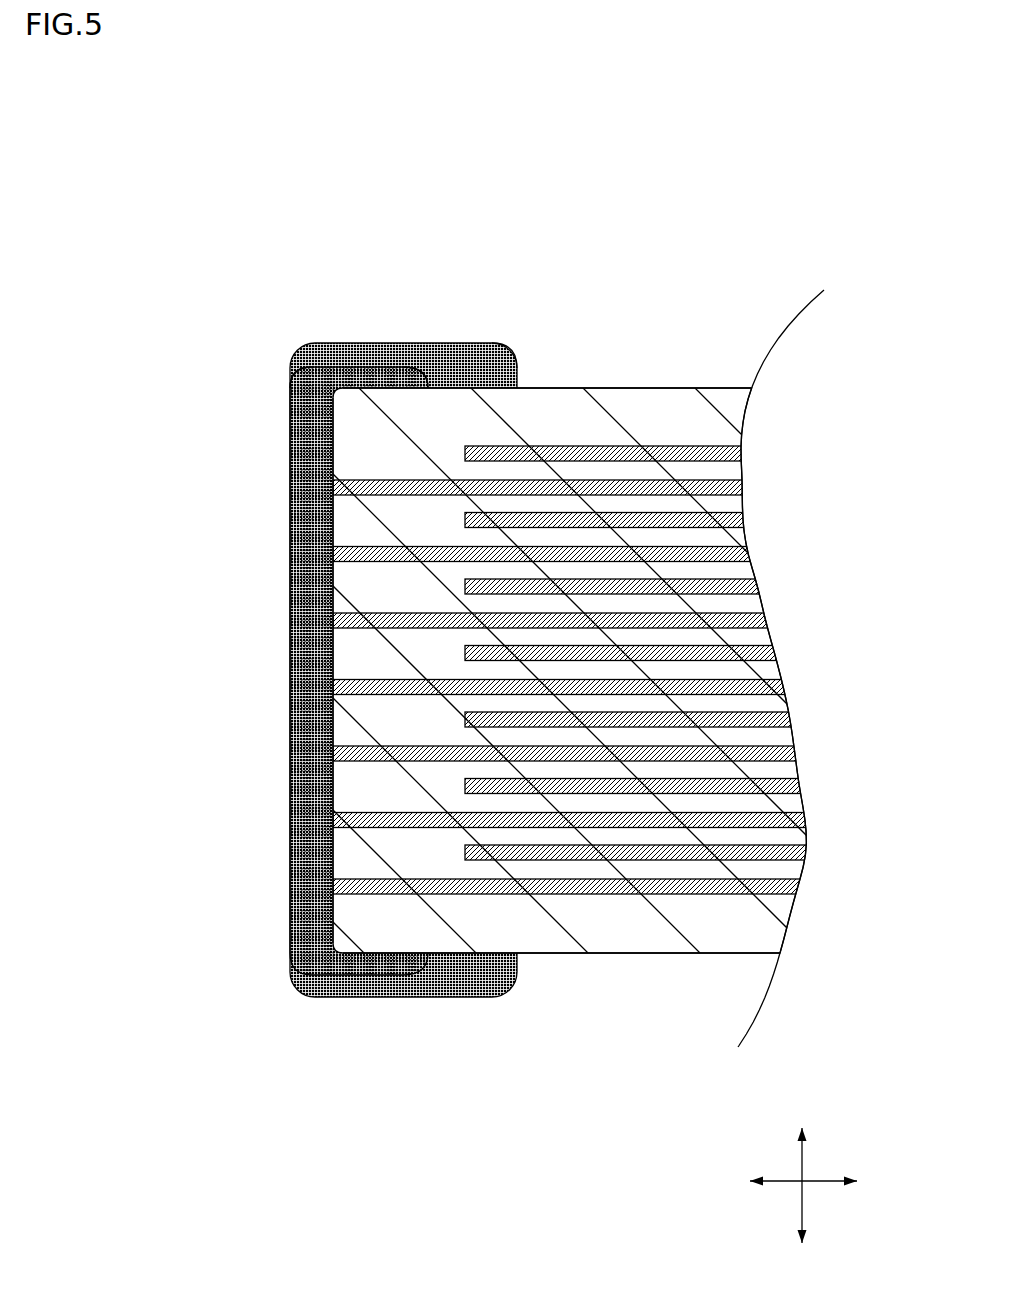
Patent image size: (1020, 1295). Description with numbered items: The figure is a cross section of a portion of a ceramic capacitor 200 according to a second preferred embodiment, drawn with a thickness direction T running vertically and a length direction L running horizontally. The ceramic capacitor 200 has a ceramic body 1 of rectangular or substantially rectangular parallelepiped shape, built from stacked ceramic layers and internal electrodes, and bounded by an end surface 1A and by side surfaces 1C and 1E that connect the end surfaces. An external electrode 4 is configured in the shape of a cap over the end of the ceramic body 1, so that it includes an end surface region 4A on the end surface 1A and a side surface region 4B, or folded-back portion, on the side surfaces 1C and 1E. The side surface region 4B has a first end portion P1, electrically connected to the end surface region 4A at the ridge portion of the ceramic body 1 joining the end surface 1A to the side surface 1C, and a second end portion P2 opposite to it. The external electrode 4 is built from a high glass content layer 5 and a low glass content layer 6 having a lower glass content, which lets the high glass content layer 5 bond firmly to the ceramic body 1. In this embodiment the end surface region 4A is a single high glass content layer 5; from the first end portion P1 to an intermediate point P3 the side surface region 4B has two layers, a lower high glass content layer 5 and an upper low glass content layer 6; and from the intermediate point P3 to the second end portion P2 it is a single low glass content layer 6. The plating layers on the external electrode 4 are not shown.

The ceramic capacitor 200 is at (134, 106).
The ceramic body 1 is at (510, 681).
The end surface 1A is at (322, 733).
The side surface 1C is at (713, 382).
The side surface 1E is at (625, 966).
The external electrode 4 is at (349, 601).
The end surface region 4A is at (290, 953).
The side surface region 4B is at (515, 345).
The high glass content layer 5 is at (310, 706).
The low glass content layer 6 is at (432, 380).
The first end portion P1 is at (323, 387).
The second end portion P2 is at (520, 367).
The intermediate point P3 is at (432, 380).
The thickness direction T is at (801, 1173).
The length direction L is at (811, 1185).